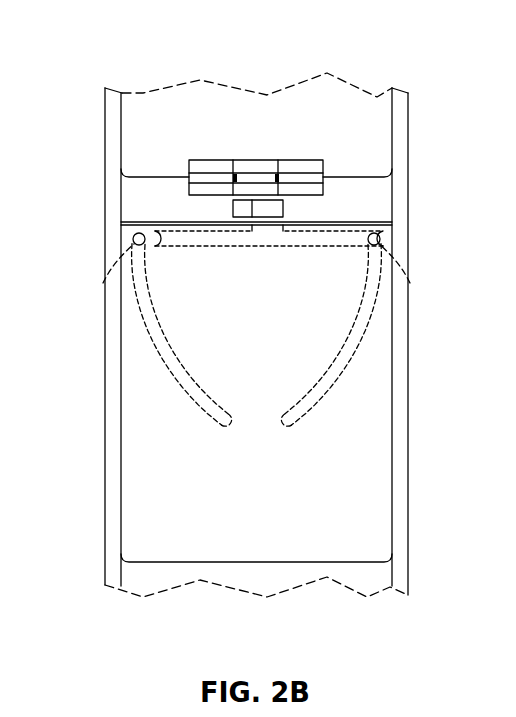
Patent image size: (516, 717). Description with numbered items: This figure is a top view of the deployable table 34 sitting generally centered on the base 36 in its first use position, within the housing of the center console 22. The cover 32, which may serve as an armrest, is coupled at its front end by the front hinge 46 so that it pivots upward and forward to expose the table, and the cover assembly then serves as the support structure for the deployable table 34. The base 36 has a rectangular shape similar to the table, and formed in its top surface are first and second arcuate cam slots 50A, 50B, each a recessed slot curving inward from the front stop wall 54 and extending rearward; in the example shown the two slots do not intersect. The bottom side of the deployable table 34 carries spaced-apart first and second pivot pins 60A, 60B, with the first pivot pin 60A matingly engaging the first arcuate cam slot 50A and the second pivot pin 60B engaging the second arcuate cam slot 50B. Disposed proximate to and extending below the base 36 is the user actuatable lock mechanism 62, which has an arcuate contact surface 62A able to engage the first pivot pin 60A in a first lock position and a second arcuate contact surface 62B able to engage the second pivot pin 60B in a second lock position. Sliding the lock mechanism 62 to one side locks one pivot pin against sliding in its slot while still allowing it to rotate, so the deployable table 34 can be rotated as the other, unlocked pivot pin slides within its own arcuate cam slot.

The center console 22 is at (408, 112).
The cover 32 is at (143, 130).
The deployable table 34 is at (145, 477).
The base 36 is at (382, 204).
The front hinge 46 is at (215, 165).
The front stop wall 54 is at (170, 214).
The lock mechanism 62 is at (273, 208).
The first pivot pin 60A is at (132, 235).
The second pivot pin 60B is at (381, 236).
The arcuate contact surface 62A is at (103, 283).
The second arcuate contact surface 62B is at (410, 283).
The first arcuate cam slot 50A is at (163, 329).
The second arcuate cam slot 50B is at (352, 330).